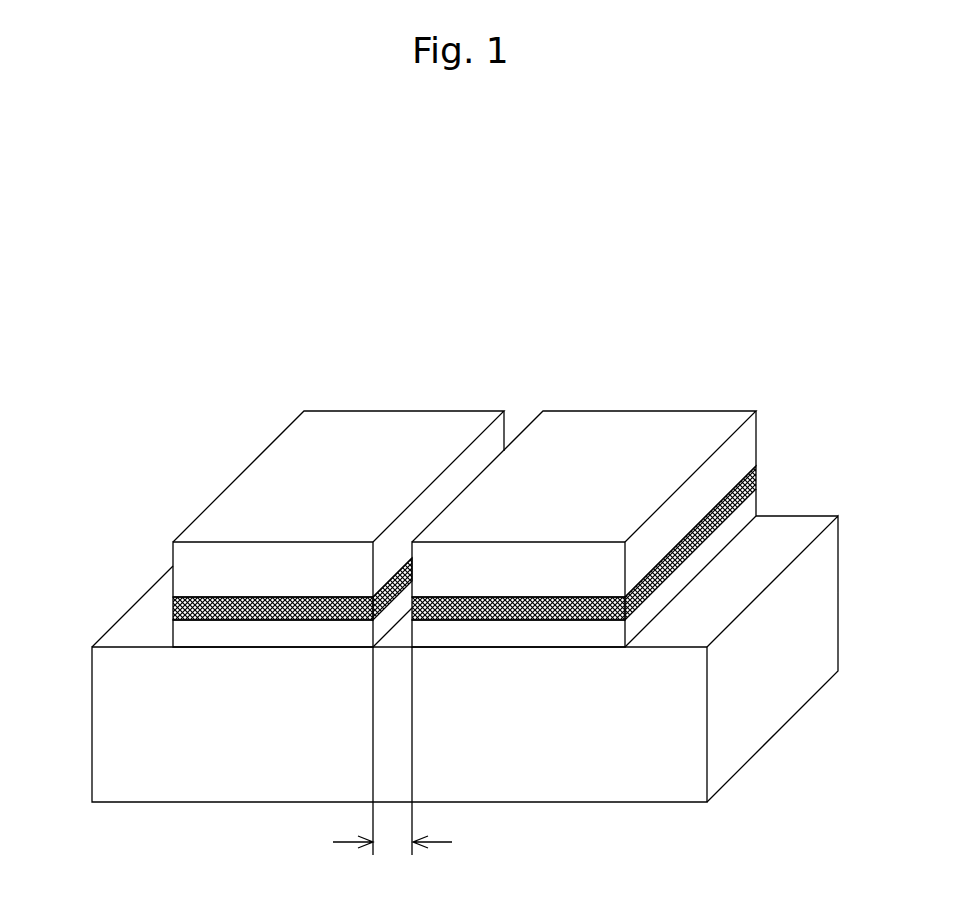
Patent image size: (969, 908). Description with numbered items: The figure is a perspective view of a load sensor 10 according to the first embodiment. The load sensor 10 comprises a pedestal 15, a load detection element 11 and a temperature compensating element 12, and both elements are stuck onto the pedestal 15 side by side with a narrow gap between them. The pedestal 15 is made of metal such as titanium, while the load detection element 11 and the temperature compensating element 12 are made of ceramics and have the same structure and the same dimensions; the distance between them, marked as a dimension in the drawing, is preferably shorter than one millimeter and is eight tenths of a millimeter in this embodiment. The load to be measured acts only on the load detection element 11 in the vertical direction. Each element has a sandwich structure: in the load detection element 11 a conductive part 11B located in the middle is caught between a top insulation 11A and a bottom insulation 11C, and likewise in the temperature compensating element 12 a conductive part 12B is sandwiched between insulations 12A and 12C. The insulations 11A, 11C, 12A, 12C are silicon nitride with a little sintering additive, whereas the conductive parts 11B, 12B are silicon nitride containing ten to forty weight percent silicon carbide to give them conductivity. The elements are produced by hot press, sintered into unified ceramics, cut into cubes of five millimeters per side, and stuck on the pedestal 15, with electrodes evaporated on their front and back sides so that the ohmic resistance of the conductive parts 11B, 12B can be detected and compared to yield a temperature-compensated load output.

The load sensor 10 is at (358, 323).
The load detection element 11 is at (297, 438).
The top insulation of load detection element 11A is at (187, 555).
The conductive part of load detection element 11B is at (187, 610).
The bottom insulation of load detection element 11C is at (187, 635).
The temperature compensating element 12 is at (608, 427).
The top insulation of temperature compensating element 12A is at (738, 450).
The conductive part of temperature compensating element 12B is at (758, 482).
The bottom insulation of temperature compensating element 12C is at (742, 525).
The pedestal 15 is at (657, 776).